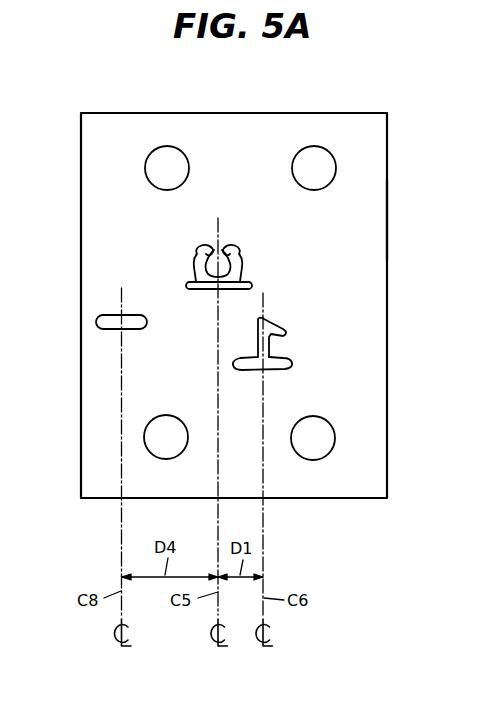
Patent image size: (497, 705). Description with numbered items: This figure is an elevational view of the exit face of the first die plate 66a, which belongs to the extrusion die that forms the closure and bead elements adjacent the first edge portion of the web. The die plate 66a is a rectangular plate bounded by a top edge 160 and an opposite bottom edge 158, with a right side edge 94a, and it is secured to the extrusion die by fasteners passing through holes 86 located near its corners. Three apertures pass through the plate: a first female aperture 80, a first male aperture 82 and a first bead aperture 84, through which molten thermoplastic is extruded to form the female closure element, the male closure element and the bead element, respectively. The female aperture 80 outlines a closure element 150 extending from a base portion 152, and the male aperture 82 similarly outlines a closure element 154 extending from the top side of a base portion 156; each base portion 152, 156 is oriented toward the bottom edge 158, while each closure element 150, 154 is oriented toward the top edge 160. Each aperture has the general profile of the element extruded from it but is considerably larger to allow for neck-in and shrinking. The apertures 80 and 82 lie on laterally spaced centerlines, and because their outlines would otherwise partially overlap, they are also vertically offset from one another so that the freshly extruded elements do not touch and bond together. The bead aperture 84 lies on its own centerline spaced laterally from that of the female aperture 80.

The top edge 160 is at (117, 112).
The first die plate 66a is at (232, 112).
The side edge of plate 94a is at (368, 218).
The bottom edge 158 is at (295, 499).
The holes 86 is at (145, 168).
The first bead aperture 84 is at (107, 316).
The first female aperture 80 is at (197, 250).
The closure element 150 is at (235, 248).
The base portion 152 is at (190, 292).
The first male aperture 82 is at (278, 321).
The closure element 154 is at (270, 336).
The base portion 156 is at (287, 365).